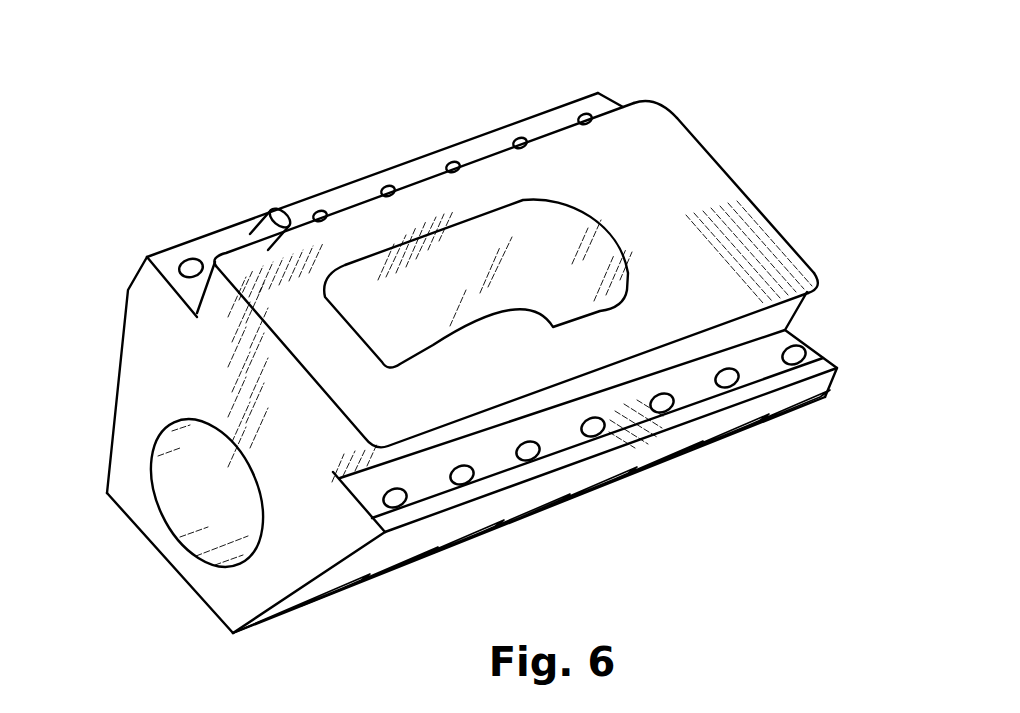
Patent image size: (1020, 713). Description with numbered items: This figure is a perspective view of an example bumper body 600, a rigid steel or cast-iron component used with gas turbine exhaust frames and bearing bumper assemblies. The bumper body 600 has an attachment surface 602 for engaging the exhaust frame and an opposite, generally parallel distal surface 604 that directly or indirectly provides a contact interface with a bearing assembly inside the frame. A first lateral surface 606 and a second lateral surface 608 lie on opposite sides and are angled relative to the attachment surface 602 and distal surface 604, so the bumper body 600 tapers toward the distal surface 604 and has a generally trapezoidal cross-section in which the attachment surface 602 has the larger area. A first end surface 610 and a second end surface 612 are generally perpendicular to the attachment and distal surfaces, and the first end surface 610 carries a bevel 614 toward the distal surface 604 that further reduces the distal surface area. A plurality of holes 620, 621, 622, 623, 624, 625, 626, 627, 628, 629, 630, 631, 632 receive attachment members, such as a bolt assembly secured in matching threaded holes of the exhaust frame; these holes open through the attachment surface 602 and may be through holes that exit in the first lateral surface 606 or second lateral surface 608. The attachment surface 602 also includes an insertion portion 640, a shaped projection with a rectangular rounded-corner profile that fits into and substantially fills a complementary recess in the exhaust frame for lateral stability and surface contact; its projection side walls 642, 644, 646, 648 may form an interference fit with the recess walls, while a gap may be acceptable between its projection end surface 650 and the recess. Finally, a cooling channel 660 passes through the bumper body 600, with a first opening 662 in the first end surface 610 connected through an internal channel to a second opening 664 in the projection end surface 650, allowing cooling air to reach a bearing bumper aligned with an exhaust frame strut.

The bumper body 600 is at (306, 102).
The attachment surface 602 is at (760, 258).
The distal surface 604 is at (280, 622).
The first lateral surface 606 is at (533, 505).
The second lateral surface 608 is at (128, 374).
The first end surface 610 is at (313, 577).
The second end surface 612 is at (725, 170).
The bevel 614 is at (200, 603).
The hole 620 is at (189, 260).
The hole 621 is at (252, 238).
The hole 622 is at (323, 210).
The hole 623 is at (389, 185).
The hole 624 is at (456, 161).
The hole 625 is at (523, 137).
The hole 626 is at (587, 114).
The hole 627 is at (403, 510).
The hole 628 is at (473, 487).
The hole 629 is at (533, 462).
The hole 630 is at (607, 437).
The hole 631 is at (670, 413).
The hole 632 is at (738, 388).
The insertion portion 640 is at (676, 137).
The projection side wall 642 is at (213, 340).
The projection side wall 644 is at (770, 318).
The projection side wall 646 is at (760, 207).
The projection side wall 648 is at (623, 105).
The projection end surface 650 is at (653, 282).
The cooling channel 660 is at (577, 272).
The first opening 662 is at (173, 520).
The second opening 664 is at (555, 222).